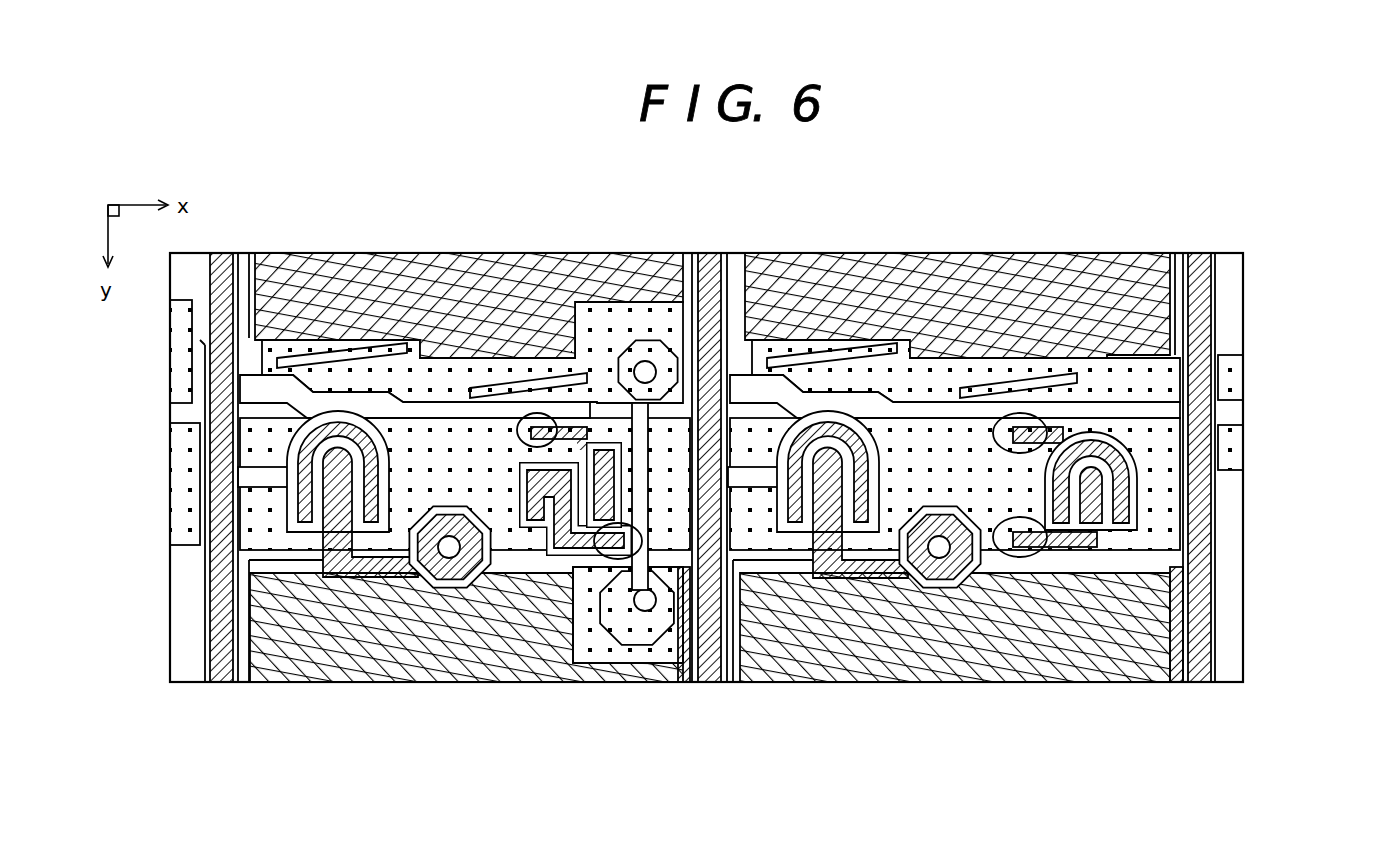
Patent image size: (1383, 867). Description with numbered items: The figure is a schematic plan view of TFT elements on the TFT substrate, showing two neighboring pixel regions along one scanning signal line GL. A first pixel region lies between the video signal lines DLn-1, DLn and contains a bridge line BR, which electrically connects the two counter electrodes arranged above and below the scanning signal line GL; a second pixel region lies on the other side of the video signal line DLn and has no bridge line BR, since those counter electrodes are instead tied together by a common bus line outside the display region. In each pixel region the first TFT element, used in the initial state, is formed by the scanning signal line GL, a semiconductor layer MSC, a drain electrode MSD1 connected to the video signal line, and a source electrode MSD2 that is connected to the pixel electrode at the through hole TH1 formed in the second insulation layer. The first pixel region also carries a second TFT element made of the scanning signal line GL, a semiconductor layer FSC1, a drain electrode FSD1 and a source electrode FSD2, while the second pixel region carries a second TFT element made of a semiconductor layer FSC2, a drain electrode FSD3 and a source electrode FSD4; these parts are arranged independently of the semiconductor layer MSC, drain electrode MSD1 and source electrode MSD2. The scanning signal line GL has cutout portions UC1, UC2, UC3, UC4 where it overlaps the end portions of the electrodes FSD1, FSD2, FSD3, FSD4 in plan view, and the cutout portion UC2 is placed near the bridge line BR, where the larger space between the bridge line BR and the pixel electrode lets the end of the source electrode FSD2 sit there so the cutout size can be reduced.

The drain electrode MSD1 is at (338, 422).
The source electrode MSD2 is at (325, 500).
The semiconductor layer MSC is at (320, 478).
The cutout portion UC1 is at (522, 418).
The cutout portion UC2 is at (641, 612).
The cutout portion UC3 is at (1020, 418).
The cutout portion UC4 is at (1015, 548).
The semiconductor layer FSC1 is at (562, 372).
The semiconductor layer FSC2 is at (1160, 502).
The drain electrode FSD1 is at (542, 512).
The source electrode FSD2 is at (605, 400).
The drain electrode FSD3 is at (1105, 470).
The source electrode FSD4 is at (1100, 532).
The video signal line DLn is at (712, 300).
The video signal line DLn-1 is at (228, 606).
The scanning signal line GL is at (1215, 448).
The through hole TH1 is at (452, 560).
The bridge line BR is at (666, 520).